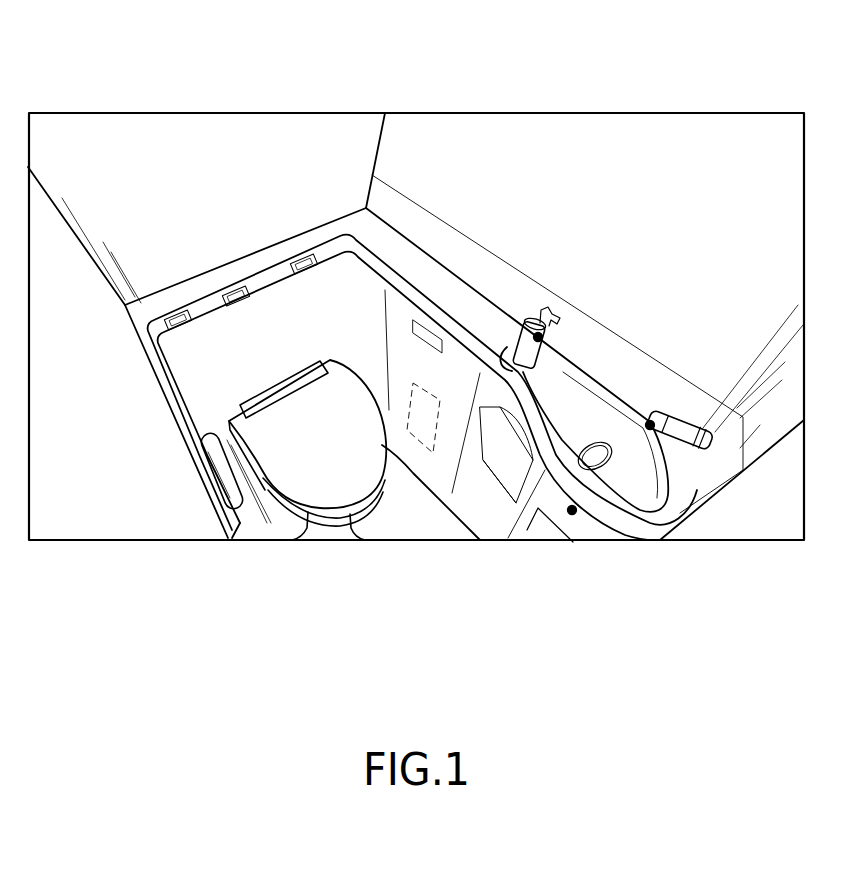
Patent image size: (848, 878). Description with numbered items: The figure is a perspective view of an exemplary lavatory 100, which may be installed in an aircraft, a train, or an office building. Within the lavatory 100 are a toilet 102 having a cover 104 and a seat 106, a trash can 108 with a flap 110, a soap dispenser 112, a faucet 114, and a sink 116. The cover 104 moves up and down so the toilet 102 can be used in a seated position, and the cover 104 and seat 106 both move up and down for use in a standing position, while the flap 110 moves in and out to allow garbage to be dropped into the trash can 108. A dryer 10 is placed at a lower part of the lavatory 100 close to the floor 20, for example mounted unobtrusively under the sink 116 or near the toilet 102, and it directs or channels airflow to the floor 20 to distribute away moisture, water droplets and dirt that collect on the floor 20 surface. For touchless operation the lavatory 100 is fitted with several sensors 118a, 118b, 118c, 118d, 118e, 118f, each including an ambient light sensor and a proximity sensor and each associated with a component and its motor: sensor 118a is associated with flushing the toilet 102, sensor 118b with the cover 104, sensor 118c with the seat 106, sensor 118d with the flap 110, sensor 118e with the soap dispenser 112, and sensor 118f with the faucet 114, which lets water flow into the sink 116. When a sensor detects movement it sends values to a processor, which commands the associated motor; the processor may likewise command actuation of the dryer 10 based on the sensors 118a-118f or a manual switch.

The lavatory 100 is at (128, 58).
The dryer 10 is at (440, 398).
The floor 20 is at (413, 473).
The toilet 102 is at (288, 513).
The cover 104 is at (307, 512).
The seat 106 is at (332, 468).
The trash can 108 is at (527, 550).
The flap 110 is at (540, 527).
The soap dispenser 112 is at (541, 306).
The faucet 114 is at (678, 427).
The sink 116 is at (630, 391).
The sensor 118a is at (172, 312).
The sensor 118b is at (237, 291).
The sensor 118c is at (307, 260).
The sensor 118d is at (572, 510).
The sensor 118e is at (538, 337).
The sensor 118f is at (650, 425).